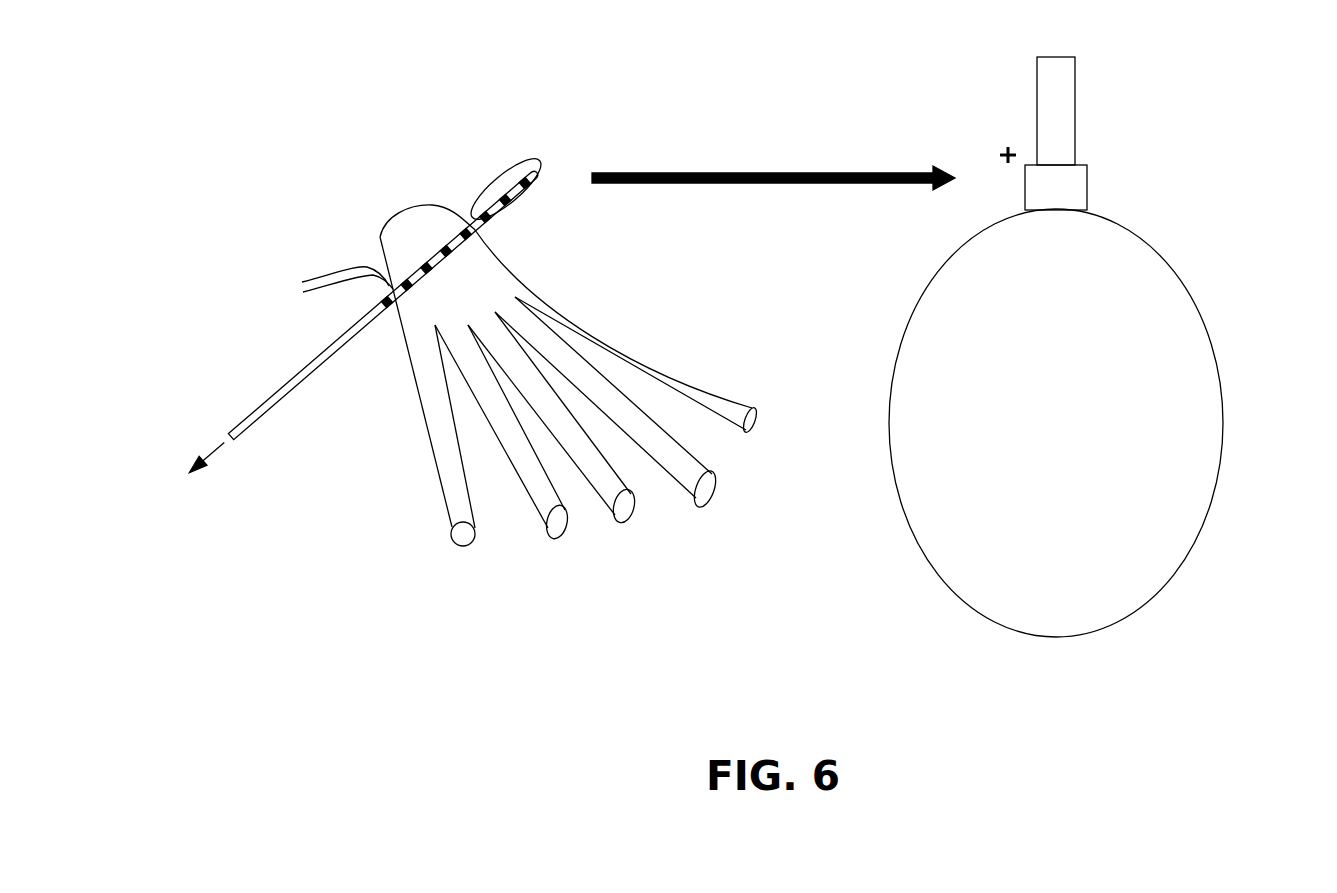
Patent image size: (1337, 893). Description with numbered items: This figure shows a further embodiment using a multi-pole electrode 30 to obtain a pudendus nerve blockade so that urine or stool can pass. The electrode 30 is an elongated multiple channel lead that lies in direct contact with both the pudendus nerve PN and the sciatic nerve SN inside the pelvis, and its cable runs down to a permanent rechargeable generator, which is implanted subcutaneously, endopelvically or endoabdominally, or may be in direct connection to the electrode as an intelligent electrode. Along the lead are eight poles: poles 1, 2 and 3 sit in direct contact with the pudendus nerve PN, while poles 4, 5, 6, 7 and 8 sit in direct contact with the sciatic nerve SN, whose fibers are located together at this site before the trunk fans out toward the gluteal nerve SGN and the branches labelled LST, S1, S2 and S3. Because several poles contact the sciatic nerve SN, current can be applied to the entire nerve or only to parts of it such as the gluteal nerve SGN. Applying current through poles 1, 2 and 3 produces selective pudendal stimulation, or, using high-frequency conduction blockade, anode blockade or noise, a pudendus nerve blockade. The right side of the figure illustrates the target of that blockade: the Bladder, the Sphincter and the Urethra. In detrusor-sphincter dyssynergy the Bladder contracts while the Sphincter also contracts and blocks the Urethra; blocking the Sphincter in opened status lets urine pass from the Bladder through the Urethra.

The electrode 30 is at (493, 170).
The pole 1 is at (534, 197).
The pole 2 is at (511, 214).
The pole 3 is at (493, 230).
The pole 4 is at (467, 248).
The pole 5 is at (449, 264).
The pole 6 is at (429, 281).
The pole 7 is at (410, 296).
The pole 8 is at (390, 314).
The sciatic nerve SN is at (566, 349).
The pudendus nerve PN is at (384, 317).
The gluteal nerve SGN is at (315, 281).
The lumbosacral trunk LST is at (456, 452).
The S1 nerve root S1 is at (503, 452).
The S2 nerve root S2 is at (555, 438).
The S3 nerve root S3 is at (613, 419).
The element generator is at (115, 480).
The urethra Urethra is at (1131, 111).
The urethral sphincter Sphincter is at (1159, 187).
The bladder Bladder is at (1108, 423).